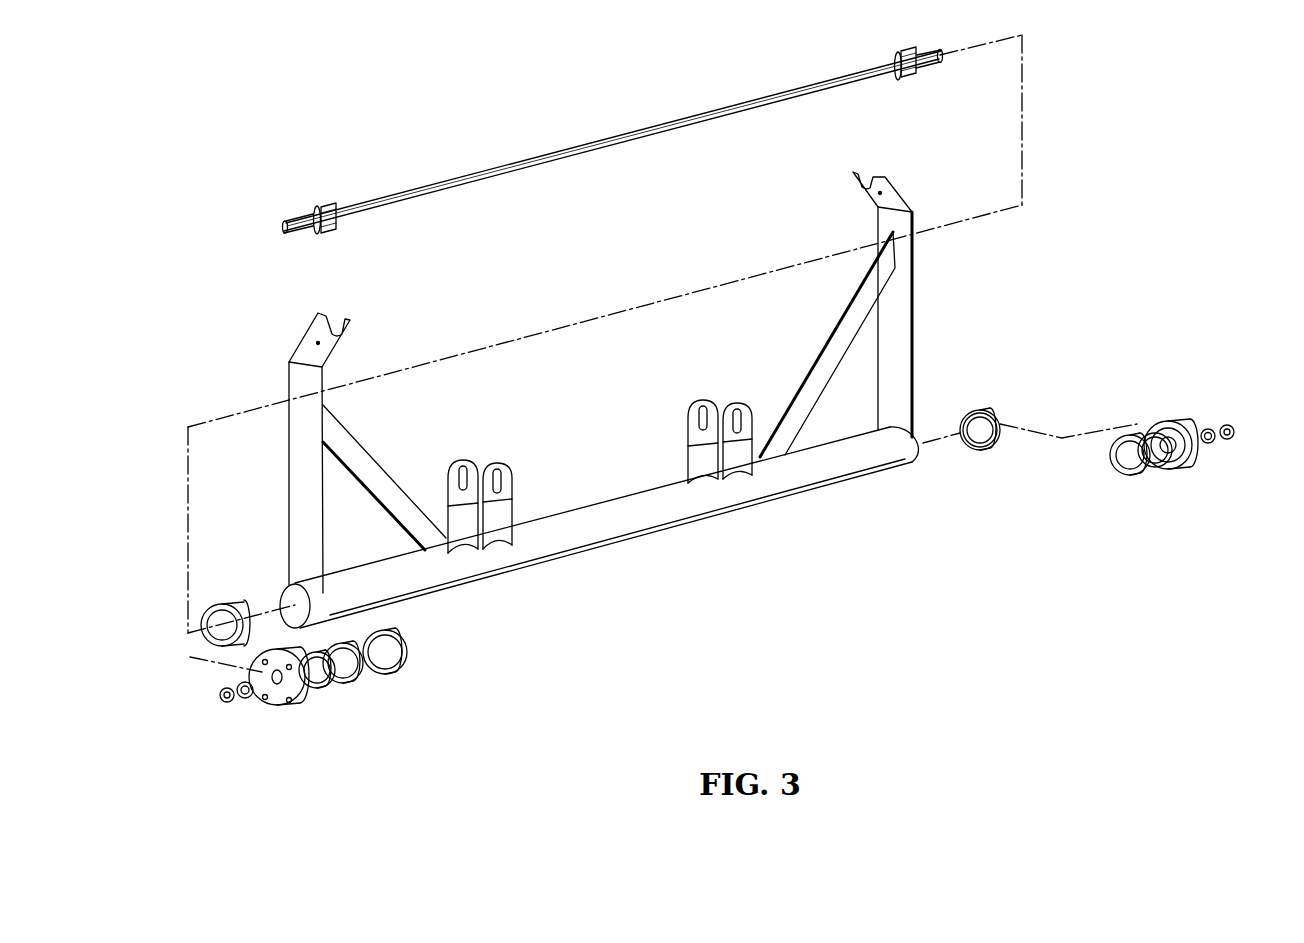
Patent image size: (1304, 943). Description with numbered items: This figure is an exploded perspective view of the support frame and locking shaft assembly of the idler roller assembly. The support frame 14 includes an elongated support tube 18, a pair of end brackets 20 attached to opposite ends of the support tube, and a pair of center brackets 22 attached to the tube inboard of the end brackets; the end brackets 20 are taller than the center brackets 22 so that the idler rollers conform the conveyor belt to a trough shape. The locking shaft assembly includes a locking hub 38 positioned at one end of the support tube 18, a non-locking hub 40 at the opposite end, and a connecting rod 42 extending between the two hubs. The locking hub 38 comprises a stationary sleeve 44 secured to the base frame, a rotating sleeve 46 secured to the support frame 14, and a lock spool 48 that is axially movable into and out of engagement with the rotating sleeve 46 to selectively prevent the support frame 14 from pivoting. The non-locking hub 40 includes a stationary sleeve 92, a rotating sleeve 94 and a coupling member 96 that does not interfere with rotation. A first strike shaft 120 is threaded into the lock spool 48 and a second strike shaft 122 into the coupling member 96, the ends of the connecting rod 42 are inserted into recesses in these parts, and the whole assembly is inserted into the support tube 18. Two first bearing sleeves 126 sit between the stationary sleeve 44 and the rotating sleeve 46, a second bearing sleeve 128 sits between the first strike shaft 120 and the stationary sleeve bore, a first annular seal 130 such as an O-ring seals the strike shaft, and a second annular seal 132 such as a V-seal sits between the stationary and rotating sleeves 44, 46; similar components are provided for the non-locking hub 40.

The support frame 14 is at (599, 400).
The support tube 18 is at (677, 525).
The end brackets 20 is at (325, 535).
The center brackets 22 is at (513, 487).
The locking hub 38 is at (235, 735).
The non-locking hub 40 is at (1185, 430).
The connecting rod 42 is at (526, 170).
The stationary sleeve 44 is at (233, 768).
The rotating sleeve 46 is at (222, 604).
The lock spool 48 is at (325, 207).
The stationary sleeve 92 is at (1180, 470).
The rotating sleeve 94 is at (984, 410).
The coupling member 96 is at (905, 78).
The first strike shaft 120 is at (303, 229).
The second strike shaft 122 is at (932, 64).
The first bearing sleeves 126 is at (352, 683).
The second bearing sleeve 128 is at (245, 699).
The first annular seal 130 is at (225, 703).
The second annular seal 132 is at (323, 688).